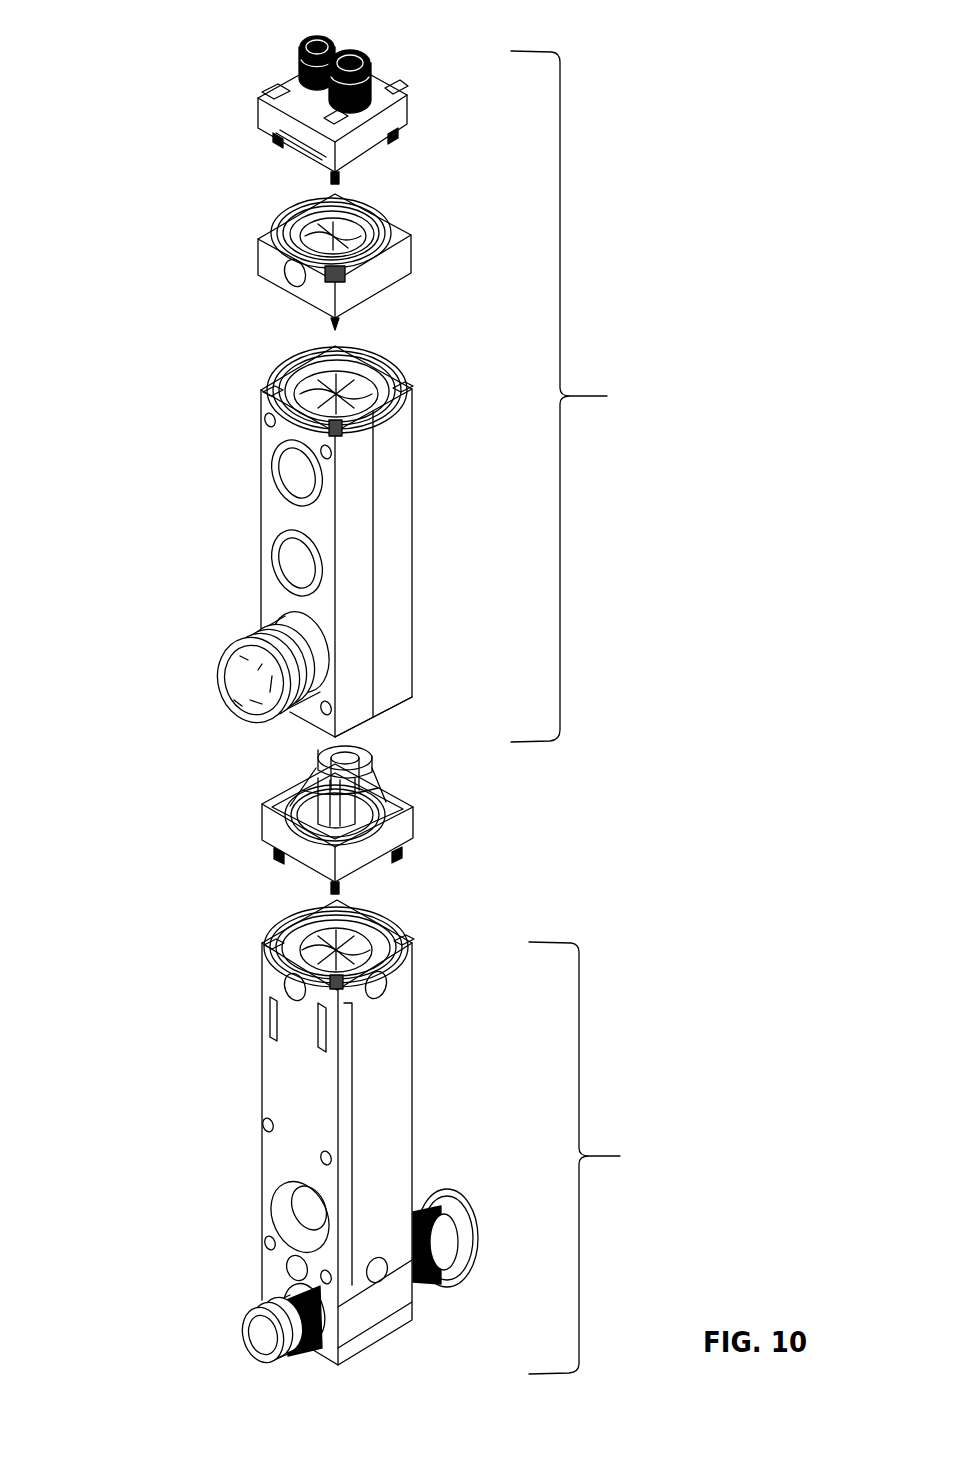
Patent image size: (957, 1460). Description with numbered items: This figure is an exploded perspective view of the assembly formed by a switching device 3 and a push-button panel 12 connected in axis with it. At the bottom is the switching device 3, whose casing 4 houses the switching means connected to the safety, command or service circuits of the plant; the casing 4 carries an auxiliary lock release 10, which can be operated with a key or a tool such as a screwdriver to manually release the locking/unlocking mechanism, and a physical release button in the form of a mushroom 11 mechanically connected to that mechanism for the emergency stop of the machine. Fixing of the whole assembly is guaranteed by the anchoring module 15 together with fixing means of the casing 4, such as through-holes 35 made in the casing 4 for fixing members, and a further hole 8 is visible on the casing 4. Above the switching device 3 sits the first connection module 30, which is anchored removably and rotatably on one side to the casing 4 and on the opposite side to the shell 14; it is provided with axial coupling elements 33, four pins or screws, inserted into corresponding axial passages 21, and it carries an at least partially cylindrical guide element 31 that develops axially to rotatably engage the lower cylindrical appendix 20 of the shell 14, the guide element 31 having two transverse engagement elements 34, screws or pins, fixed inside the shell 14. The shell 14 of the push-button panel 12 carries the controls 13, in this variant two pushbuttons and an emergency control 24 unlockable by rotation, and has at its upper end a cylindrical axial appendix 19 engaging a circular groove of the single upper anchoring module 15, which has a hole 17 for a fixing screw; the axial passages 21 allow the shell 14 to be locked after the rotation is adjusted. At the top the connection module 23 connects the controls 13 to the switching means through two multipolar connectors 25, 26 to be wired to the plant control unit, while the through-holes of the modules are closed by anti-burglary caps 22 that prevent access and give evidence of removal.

The switching device 3 is at (591, 1158).
The casing 4 is at (262, 1112).
The port 8 is at (292, 1218).
The auxiliary lock release 10 is at (255, 1345).
The mushroom 11 is at (448, 1222).
The push-button panel 12 is at (588, 396).
The controls 13 is at (290, 568).
The shell 14 is at (398, 552).
The upper anchoring module 15 is at (272, 260).
The hole 17 is at (290, 284).
The cylindrical axial appendix 19 is at (382, 368).
The lower cylindrical appendix 20 is at (380, 737).
The axial passages 21 is at (262, 392).
The anti-burglary caps 22 is at (258, 105).
The connection module 23 is at (388, 128).
The emergency control 24 is at (225, 690).
The multipolar connector 25 is at (315, 47).
The multipolar connector 26 is at (352, 62).
The first connection module 30 is at (270, 832).
The guide element 31 is at (378, 786).
The axial coupling elements 33 is at (404, 860).
The transverse engagement elements 34 is at (318, 770).
The through-holes 35 is at (386, 990).